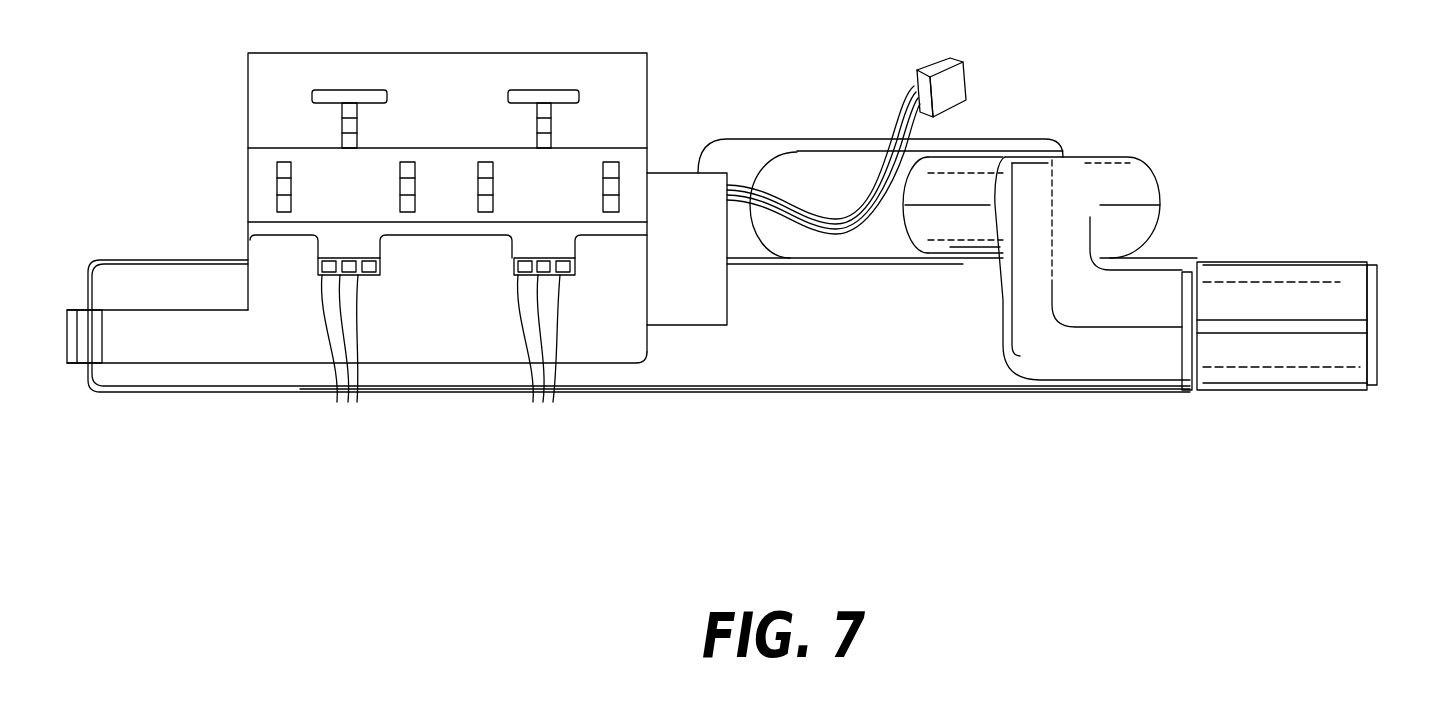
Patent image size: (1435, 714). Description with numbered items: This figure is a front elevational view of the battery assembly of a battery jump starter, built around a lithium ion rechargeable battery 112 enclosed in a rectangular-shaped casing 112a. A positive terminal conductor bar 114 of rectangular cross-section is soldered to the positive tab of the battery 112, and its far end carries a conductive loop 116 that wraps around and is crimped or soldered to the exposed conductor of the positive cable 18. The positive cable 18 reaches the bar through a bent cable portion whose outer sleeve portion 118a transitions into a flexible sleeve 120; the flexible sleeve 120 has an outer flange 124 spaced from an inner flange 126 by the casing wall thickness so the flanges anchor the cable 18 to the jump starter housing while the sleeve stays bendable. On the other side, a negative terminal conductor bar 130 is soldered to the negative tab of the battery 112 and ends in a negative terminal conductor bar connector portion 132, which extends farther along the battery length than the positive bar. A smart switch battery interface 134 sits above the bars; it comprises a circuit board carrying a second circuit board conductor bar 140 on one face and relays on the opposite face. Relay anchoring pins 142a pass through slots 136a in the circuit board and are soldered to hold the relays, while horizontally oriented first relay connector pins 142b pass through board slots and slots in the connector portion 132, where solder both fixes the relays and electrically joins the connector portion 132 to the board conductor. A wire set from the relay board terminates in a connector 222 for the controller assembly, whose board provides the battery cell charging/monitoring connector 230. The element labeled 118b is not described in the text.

The positive cable 18 is at (1122, 152).
The battery 112 is at (826, 393).
The rectangular-shaped casing 112a is at (913, 355).
The positive terminal conductor bar 114 is at (1370, 323).
The conductive loop 116 is at (1270, 355).
The outer sleeve portion 118a is at (1135, 185).
The elbow lower flange 118b is at (1188, 358).
The flexible sleeve 120 is at (746, 138).
The outer flange 124 is at (725, 135).
The inner flange 126 is at (787, 177).
The negative terminal conductor bar 130 is at (87, 338).
The negative terminal conductor bar connector portion 132 is at (396, 352).
The smart switch battery interface 134 is at (247, 147).
The slots 136a is at (282, 170).
The second circuit board conductor bar 140 is at (273, 84).
The relay anchoring pins 142a is at (281, 187).
The first relay connector pins 142b is at (446, 347).
The connector 222 is at (953, 85).
The battery cell charging/monitoring connector 230 is at (850, 215).